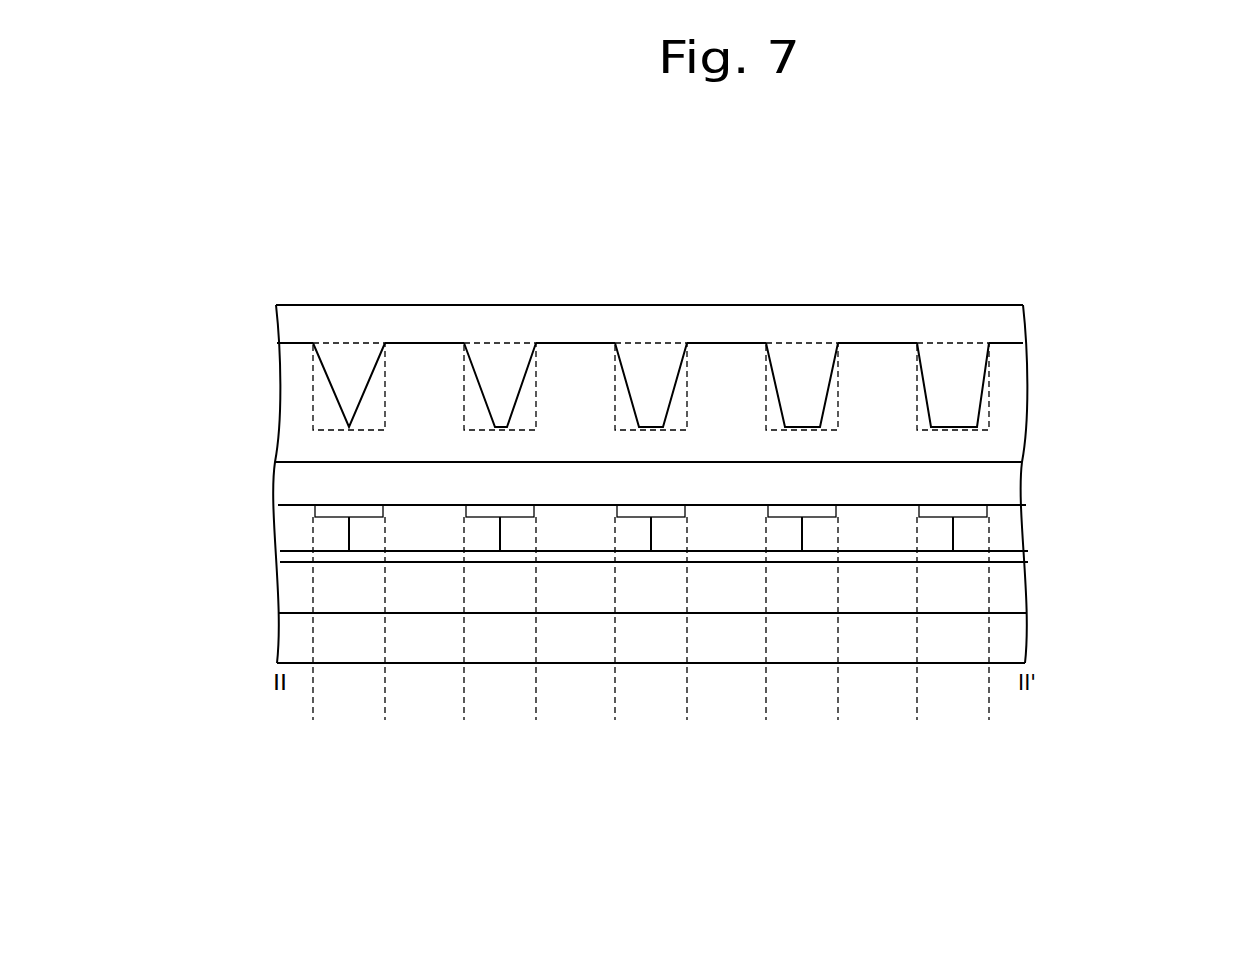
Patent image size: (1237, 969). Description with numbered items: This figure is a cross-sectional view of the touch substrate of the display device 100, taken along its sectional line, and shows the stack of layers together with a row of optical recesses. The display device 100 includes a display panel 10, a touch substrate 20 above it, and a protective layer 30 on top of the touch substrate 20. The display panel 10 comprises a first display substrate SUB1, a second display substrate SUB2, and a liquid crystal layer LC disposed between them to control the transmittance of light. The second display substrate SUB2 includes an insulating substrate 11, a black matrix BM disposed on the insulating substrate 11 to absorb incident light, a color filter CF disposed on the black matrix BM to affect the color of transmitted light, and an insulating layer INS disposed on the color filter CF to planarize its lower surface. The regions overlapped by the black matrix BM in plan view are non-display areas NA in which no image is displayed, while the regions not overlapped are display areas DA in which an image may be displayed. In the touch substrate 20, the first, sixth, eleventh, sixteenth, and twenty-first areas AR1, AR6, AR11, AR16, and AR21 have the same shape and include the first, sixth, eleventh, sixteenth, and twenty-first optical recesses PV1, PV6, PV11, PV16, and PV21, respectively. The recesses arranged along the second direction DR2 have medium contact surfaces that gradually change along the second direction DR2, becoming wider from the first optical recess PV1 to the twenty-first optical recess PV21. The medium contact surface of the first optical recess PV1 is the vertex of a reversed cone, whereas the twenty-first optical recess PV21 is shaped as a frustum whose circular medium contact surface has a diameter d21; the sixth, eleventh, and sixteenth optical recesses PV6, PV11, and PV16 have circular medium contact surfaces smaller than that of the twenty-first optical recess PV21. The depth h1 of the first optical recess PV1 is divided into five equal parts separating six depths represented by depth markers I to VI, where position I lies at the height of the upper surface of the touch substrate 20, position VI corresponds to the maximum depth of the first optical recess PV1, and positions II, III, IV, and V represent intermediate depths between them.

The display device 100 is at (1071, 220).
The protective layer 30 is at (1017, 325).
The touch substrate 20 is at (1019, 400).
The insulating substrate 11 is at (1017, 475).
The display panel 10 is at (1183, 505).
The black matrix BM is at (970, 511).
The color filter CF is at (1017, 528).
The insulating layer INS is at (1020, 555).
The liquid crystal layer LC is at (1017, 595).
The first display substrate SUB1 is at (1017, 641).
The second display substrate SUB2 is at (1106, 462).
The first area AR1 is at (337, 343).
The first optical recess PV1 is at (357, 347).
The sixth area AR6 is at (488, 343).
The sixth optical recess PV6 is at (507, 347).
The eleventh area AR11 is at (638, 343).
The eleventh optical recess PV11 is at (658, 347).
The sixteenth area AR16 is at (790, 343).
The sixteenth optical recess PV16 is at (808, 347).
The twenty-first area AR21 is at (940, 343).
The twenty-first optical recess PV21 is at (960, 347).
The depth of the first optical recess h1 is at (400, 343).
The diameter d21 is at (977, 437).
The non-display area NA is at (989, 707).
The display area DA is at (917, 707).
The second direction DR2 is at (1007, 790).
The position I is at (277, 343).
The position II is at (385, 361).
The position III is at (385, 377).
The position IV is at (385, 394).
The position V is at (385, 411).
The position VI is at (313, 430).